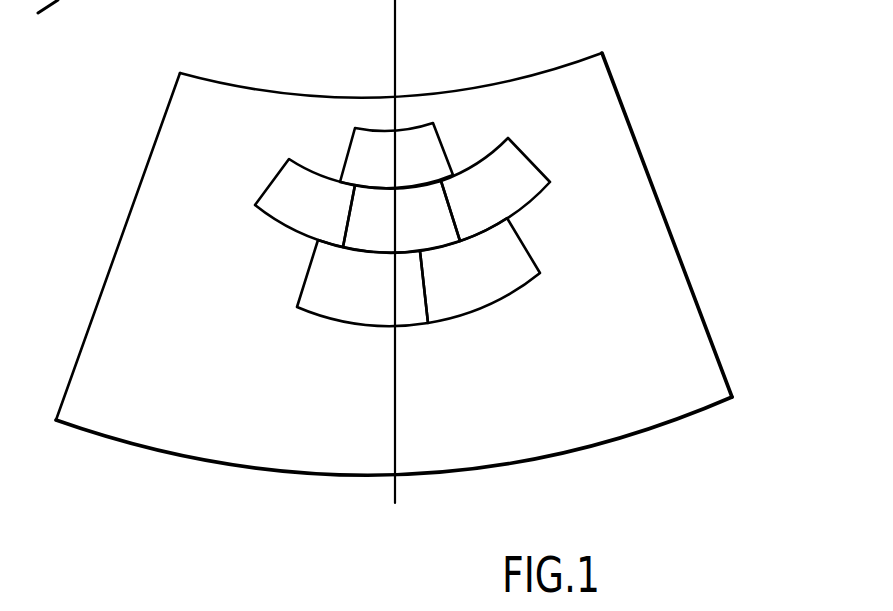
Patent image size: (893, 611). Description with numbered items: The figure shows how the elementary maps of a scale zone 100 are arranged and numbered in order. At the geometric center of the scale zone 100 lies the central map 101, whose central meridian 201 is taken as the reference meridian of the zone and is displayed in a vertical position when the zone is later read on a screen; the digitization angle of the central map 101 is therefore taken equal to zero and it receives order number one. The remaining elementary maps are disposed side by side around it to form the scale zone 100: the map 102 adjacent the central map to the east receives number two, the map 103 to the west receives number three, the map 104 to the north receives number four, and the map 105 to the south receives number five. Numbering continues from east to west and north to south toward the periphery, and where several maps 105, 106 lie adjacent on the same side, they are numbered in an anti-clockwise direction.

The scale zone 100 is at (652, 178).
The central meridian 201 is at (395, 50).
The central map 101 is at (363, 223).
The map 102 is at (503, 198).
The map 103 is at (280, 192).
The map 104 is at (372, 140).
The map 105 is at (320, 290).
The map 106 is at (452, 285).